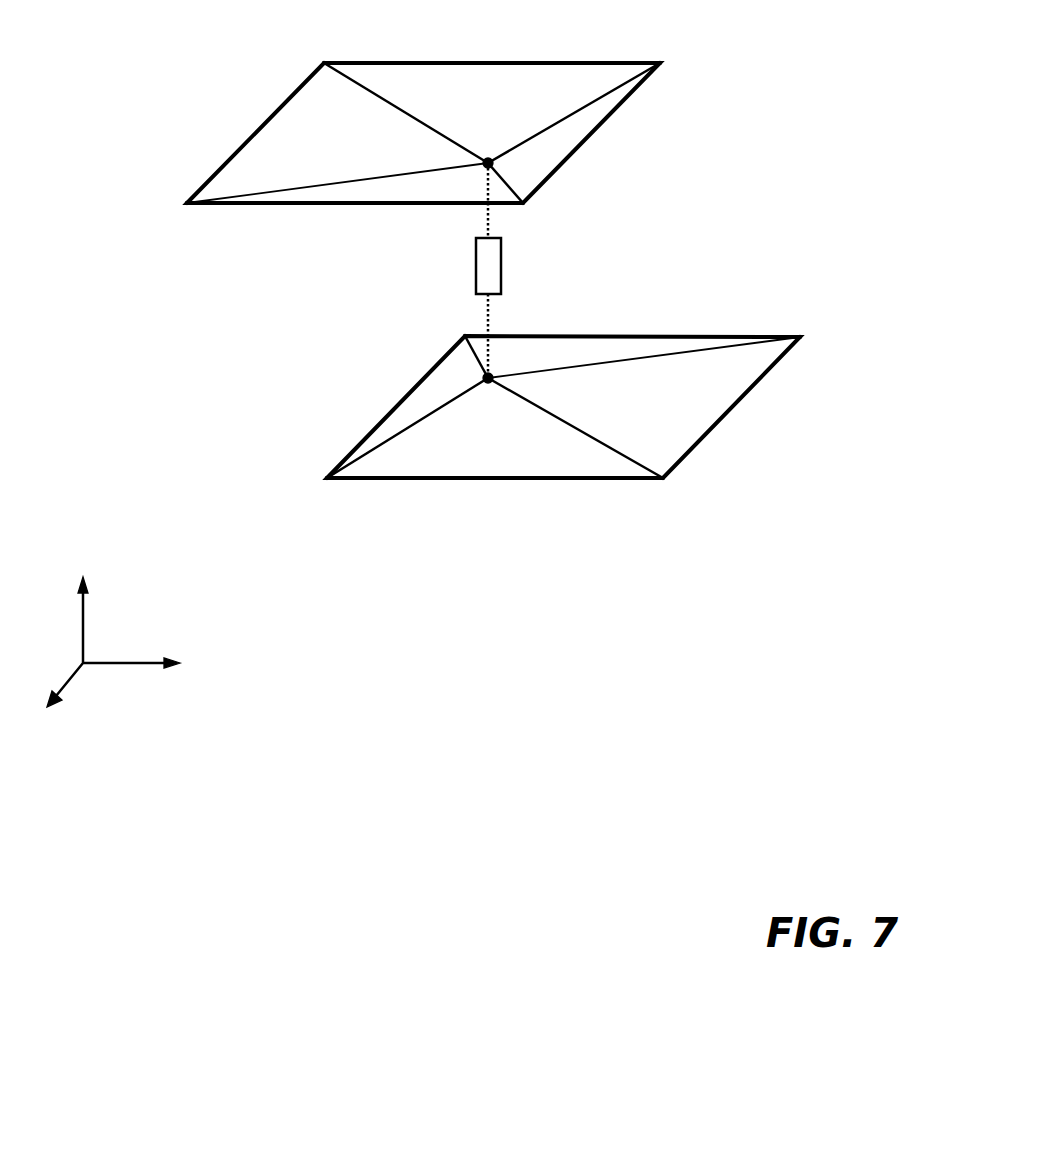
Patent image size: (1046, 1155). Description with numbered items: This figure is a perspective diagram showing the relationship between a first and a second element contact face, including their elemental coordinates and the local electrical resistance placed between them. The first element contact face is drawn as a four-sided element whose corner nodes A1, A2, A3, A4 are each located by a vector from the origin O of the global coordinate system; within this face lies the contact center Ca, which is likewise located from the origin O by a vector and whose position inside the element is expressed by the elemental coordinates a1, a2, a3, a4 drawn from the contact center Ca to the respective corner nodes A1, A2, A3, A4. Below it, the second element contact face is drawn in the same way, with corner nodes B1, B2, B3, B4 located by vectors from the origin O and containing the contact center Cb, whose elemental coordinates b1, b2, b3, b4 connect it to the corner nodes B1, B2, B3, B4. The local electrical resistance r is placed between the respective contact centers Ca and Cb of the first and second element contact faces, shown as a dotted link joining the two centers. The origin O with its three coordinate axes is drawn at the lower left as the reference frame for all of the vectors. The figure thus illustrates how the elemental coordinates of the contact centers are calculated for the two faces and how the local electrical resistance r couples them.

The corner node of first element contact face A1 is at (163, 214).
The corner node of first element contact face A2 is at (296, 48).
The corner node of first element contact face A3 is at (680, 48).
The corner node of first element contact face A4 is at (550, 214).
The elemental coordinate of contact center Ca a1 is at (337, 179).
The elemental coordinate of contact center Ca a2 is at (406, 113).
The elemental coordinate of contact center Ca a3 is at (574, 113).
The elemental coordinate of contact center Ca a4 is at (511, 182).
The contact center of first element contact face Ca is at (486, 144).
The local electrical resistance r is at (488, 271).
The corner node of second element contact face B1 is at (301, 502).
The corner node of second element contact face B2 is at (442, 318).
The corner node of second element contact face B3 is at (816, 318).
The corner node of second element contact face B4 is at (684, 502).
The elemental coordinate of contact center Cb b1 is at (407, 428).
The elemental coordinate of contact center Cb b2 is at (469, 361).
The elemental coordinate of contact center Cb b3 is at (644, 373).
The elemental coordinate of contact center Cb b4 is at (575, 428).
The contact center of second element contact face Cb is at (491, 402).
The origin of global coordinate system O is at (109, 642).